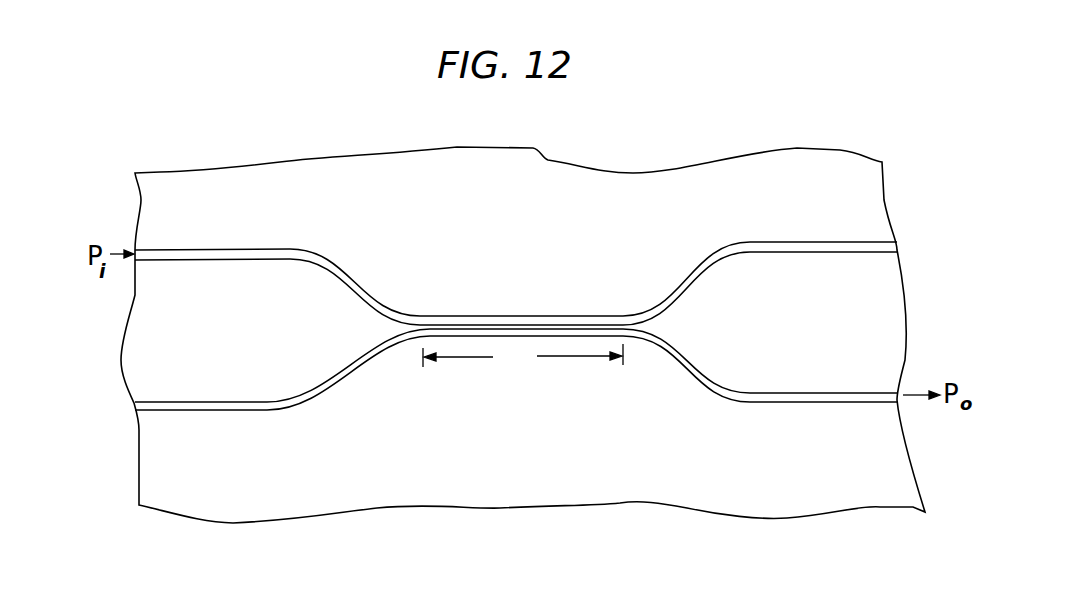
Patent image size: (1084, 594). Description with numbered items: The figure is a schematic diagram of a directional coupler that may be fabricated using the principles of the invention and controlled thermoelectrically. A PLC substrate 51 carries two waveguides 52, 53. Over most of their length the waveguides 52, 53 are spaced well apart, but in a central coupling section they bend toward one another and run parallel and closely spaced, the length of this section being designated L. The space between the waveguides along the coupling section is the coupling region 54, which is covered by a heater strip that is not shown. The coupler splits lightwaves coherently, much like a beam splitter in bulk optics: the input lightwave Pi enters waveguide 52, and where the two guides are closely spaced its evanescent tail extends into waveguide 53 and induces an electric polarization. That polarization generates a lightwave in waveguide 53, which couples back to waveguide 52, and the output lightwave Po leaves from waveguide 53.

The PLC substrate 51 is at (693, 170).
The waveguide 52 is at (290, 255).
The waveguide 53 is at (283, 405).
The coupling region 54 is at (527, 323).